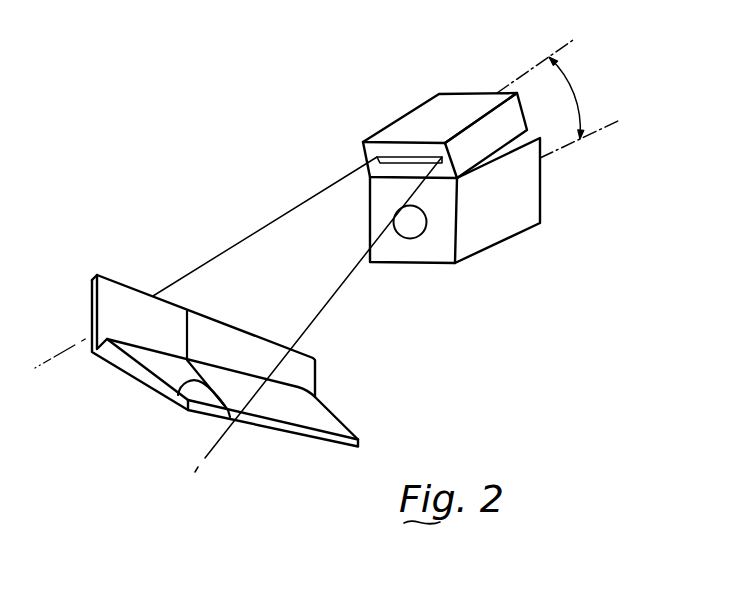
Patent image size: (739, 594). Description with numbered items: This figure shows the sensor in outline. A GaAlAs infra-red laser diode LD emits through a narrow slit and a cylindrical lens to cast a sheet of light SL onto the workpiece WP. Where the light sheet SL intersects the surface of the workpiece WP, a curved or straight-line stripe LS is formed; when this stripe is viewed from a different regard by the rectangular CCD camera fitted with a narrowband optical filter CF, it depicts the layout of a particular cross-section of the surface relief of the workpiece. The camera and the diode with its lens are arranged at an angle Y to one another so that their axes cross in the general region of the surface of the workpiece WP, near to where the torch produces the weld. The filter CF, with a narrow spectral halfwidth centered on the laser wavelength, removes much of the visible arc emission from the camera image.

The laser diode LD is at (474, 103).
The narrowband optical filter CF is at (498, 230).
The angle Y is at (572, 91).
The sheet of light SL is at (265, 242).
The stripe LS is at (178, 395).
The workpiece WP is at (273, 425).